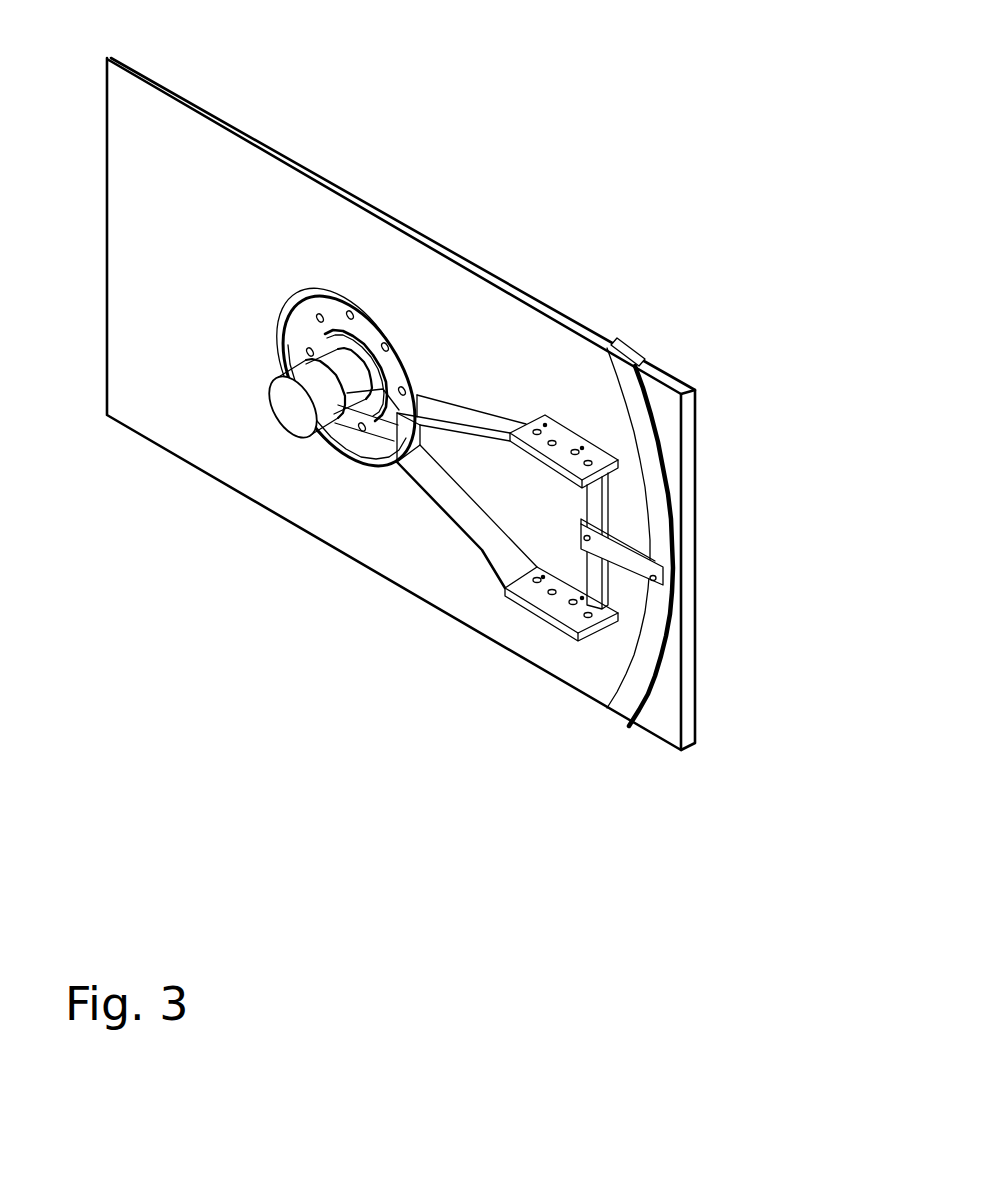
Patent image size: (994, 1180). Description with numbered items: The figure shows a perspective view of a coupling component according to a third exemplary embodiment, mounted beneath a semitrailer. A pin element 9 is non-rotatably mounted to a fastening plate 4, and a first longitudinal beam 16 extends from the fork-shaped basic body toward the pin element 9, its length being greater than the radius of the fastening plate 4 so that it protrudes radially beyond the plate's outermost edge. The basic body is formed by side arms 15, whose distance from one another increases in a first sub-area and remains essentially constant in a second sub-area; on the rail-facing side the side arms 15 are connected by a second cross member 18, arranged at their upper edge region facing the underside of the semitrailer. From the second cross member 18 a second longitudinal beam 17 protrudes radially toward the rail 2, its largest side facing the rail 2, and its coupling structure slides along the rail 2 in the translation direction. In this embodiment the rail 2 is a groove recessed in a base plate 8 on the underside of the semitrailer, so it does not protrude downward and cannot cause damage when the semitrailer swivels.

The base plate 8 is at (306, 222).
The fastening plate 4 is at (368, 322).
The side arm 15 is at (461, 410).
The rail 2 is at (673, 482).
The second longitudinal beam 17 is at (623, 560).
The second cross member 18 is at (600, 578).
The pin element 9 is at (278, 409).
The first longitudinal beam 16 is at (372, 403).